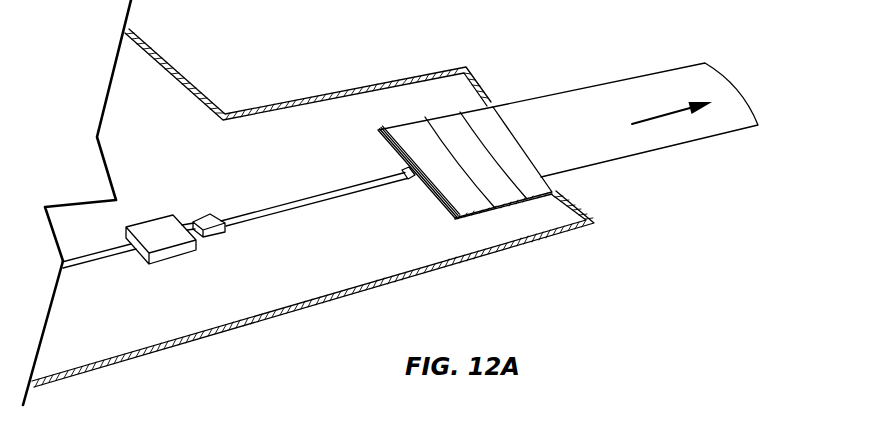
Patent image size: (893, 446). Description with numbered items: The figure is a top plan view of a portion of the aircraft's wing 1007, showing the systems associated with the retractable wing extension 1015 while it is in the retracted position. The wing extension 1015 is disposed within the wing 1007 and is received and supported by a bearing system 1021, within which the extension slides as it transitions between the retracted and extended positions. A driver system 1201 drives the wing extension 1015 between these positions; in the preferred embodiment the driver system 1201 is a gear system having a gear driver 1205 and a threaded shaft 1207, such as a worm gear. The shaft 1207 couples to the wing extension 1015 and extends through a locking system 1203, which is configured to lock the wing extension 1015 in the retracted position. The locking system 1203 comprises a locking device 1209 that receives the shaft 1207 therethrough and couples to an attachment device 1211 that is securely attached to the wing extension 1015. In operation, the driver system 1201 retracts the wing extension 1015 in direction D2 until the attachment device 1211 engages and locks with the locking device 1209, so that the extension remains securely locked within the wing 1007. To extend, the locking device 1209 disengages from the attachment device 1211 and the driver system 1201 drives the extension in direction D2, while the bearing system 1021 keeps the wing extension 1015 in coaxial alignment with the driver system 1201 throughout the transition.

The wing structure 1007 is at (497, 273).
The wing extension 1015 is at (636, 157).
The bearing system 1021 is at (442, 127).
The driver system 1201 is at (154, 292).
The locking system 1203 is at (204, 181).
The gear driver 1205 is at (167, 255).
The threaded shaft 1207 is at (265, 217).
The locking device 1209 is at (222, 212).
The attachment device 1211 is at (405, 176).
The direction D2 is at (650, 116).